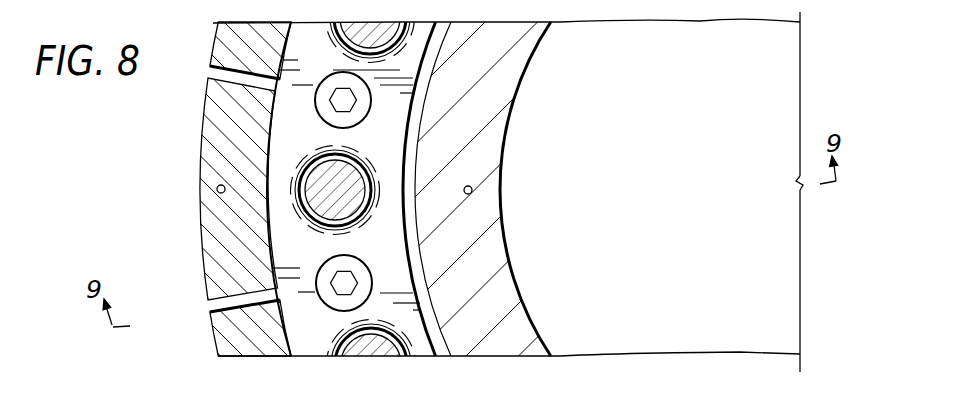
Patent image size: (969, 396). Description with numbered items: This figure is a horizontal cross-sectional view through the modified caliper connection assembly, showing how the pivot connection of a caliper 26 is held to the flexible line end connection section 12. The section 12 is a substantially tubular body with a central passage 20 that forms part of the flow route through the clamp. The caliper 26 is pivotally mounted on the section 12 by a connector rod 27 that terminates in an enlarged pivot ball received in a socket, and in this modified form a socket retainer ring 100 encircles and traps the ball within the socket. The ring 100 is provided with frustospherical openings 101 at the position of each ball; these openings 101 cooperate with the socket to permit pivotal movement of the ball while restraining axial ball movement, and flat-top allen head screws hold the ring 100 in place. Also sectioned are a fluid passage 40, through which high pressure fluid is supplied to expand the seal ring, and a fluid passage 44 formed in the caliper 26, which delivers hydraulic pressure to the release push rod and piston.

The flexible line end connection section 12 is at (522, 333).
The central passage 20 is at (537, 52).
The caliper 26 is at (202, 247).
The connector rod 27 is at (322, 177).
The fluid passage 40 is at (472, 191).
The fluid passage 44 is at (217, 190).
The socket retainer ring 100 is at (395, 133).
The frustospherical openings 101 is at (367, 280).